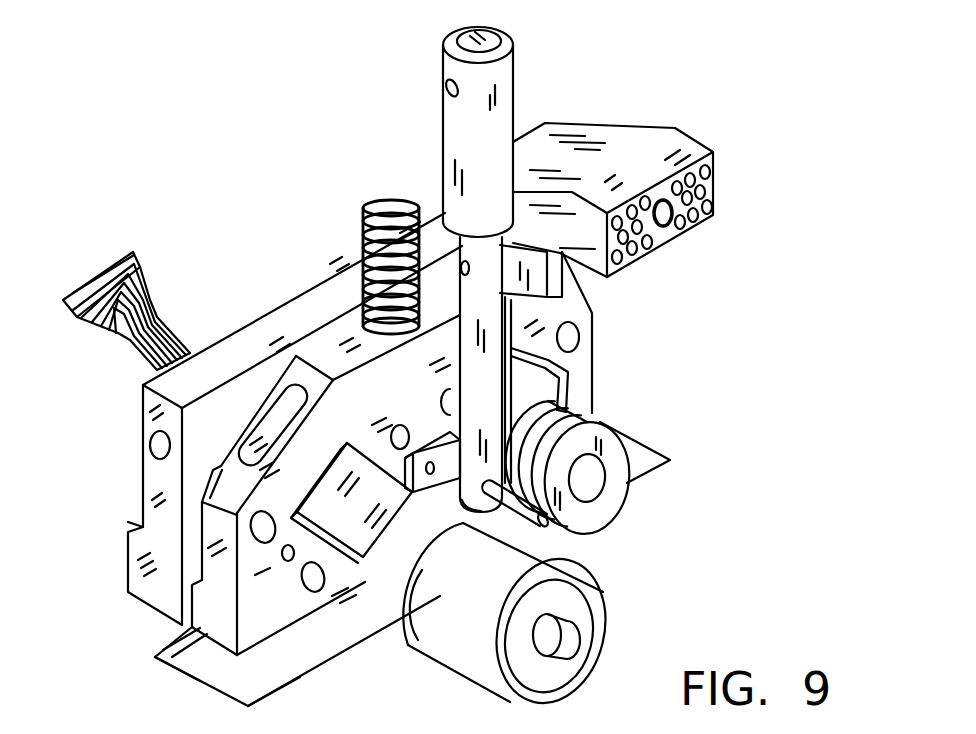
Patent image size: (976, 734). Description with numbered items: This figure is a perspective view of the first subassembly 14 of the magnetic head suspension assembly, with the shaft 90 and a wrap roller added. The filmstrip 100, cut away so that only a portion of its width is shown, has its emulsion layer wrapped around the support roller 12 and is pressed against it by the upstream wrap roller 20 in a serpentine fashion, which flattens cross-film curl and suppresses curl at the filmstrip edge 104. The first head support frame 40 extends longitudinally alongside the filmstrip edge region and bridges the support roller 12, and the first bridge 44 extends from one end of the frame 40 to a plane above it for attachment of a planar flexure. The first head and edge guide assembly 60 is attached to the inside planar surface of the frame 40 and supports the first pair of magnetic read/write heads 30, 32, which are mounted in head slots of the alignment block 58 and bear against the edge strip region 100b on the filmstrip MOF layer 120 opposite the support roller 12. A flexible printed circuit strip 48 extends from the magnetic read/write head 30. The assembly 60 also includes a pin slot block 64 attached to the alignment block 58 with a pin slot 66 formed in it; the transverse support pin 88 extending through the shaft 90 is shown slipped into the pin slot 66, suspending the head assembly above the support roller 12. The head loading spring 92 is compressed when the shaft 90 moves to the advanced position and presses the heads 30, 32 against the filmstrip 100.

The support roller 12 is at (606, 604).
The first subassembly 14 is at (611, 328).
The upstream wrap roller 20 is at (612, 495).
The magnetic read/write head 30 is at (385, 512).
The magnetic read/write head 32 is at (590, 387).
The first head support frame 40 is at (143, 437).
The first bridge 44 is at (681, 135).
The flexible printed circuit strip 48 is at (131, 252).
The alignment block 58 is at (296, 356).
The first head and edge guide assembly 60 is at (215, 562).
The pin slot block 64 is at (437, 440).
The pin slot 66 is at (453, 503).
The transverse support pin 88 is at (572, 536).
The shaft 90 is at (513, 88).
The head loading spring 92 is at (378, 208).
The filmstrip 100 is at (330, 671).
The edge strip region 100b is at (198, 681).
The filmstrip edge 104 is at (157, 650).
The filmstrip MOF layer 120 is at (243, 670).